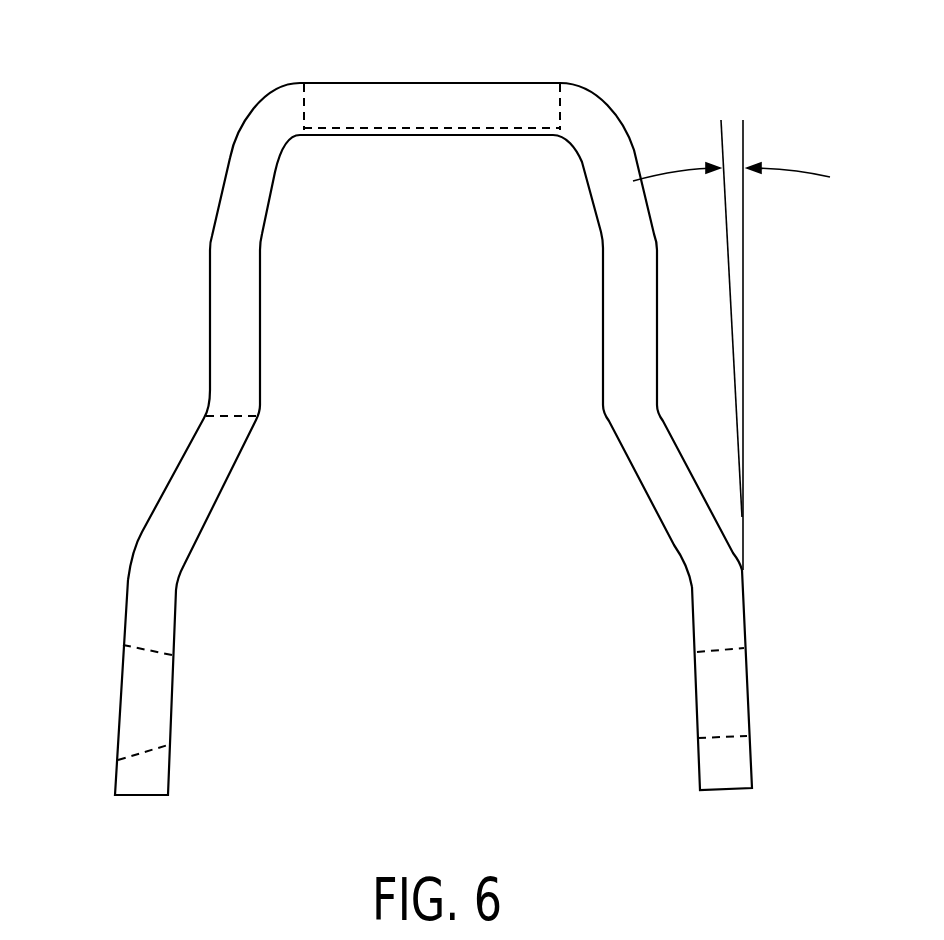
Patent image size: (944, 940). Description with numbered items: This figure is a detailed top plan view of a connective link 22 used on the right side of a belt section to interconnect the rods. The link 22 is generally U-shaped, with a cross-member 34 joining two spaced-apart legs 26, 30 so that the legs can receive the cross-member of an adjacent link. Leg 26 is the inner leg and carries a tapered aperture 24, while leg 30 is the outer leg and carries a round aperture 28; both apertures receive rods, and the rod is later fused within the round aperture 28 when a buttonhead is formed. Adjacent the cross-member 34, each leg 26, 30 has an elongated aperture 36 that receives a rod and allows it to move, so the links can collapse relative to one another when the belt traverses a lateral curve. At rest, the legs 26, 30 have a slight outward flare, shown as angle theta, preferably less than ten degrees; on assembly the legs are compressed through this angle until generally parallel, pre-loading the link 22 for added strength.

The connective link 22 is at (135, 188).
The cross-member 34 is at (363, 83).
The elongated aperture 36 is at (230, 413).
The leg 26 is at (163, 517).
The tapered aperture 24 is at (143, 652).
The leg 30 is at (692, 539).
The round aperture 28 is at (720, 652).